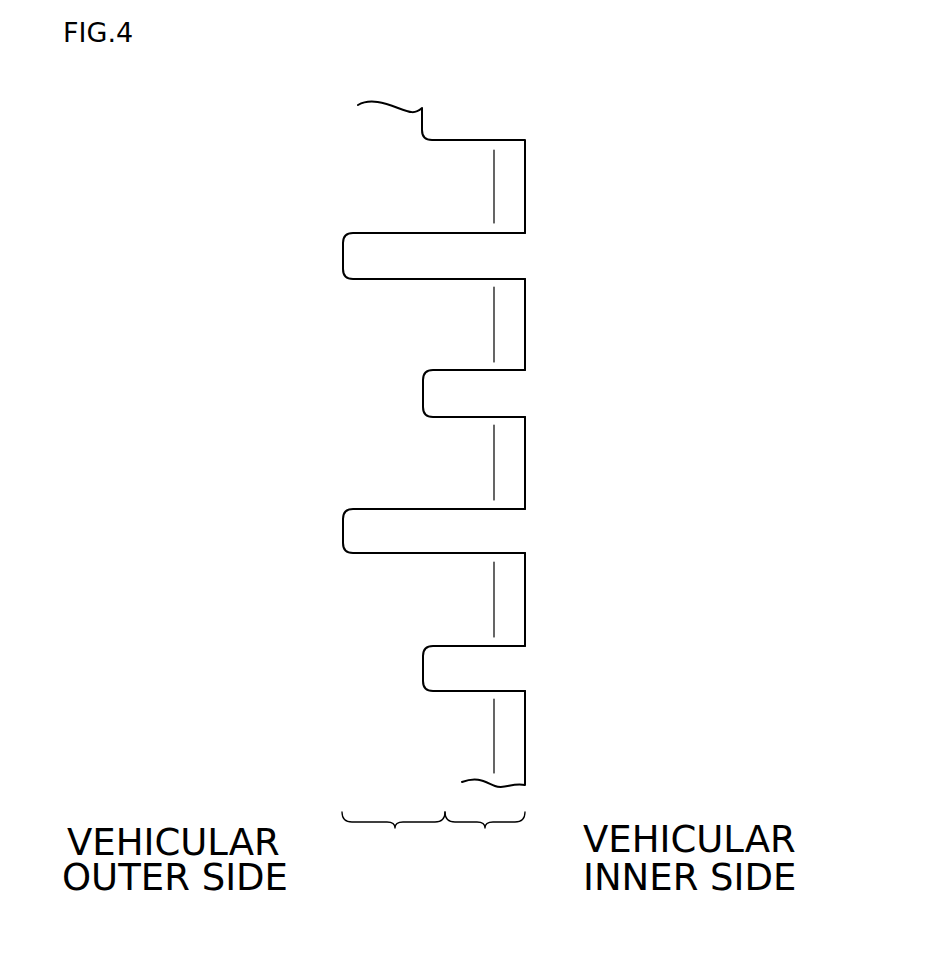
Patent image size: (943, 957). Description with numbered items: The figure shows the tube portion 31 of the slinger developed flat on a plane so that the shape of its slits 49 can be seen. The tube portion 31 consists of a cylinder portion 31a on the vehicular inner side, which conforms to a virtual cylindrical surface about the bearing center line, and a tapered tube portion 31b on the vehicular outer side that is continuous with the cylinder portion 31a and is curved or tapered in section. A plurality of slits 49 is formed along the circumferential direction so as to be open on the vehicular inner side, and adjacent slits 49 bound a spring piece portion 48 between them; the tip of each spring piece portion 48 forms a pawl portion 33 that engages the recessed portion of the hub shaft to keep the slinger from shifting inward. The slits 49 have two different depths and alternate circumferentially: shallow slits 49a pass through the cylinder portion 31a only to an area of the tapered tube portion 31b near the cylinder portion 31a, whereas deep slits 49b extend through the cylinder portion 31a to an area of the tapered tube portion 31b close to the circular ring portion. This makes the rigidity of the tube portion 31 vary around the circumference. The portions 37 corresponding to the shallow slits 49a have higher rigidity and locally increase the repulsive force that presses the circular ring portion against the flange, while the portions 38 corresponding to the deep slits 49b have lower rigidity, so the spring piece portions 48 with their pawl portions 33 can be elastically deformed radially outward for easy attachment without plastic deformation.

The tube portion 31 is at (495, 122).
The cylinder portion 31a is at (485, 833).
The tapered tube portion 31b is at (393, 833).
The pawl portion 33 is at (525, 185).
The portion of the tube portion corresponding to the shallow slits 37 is at (410, 395).
The portion of the tube portion corresponding to the deep slits 38 is at (330, 257).
The spring piece portion 48 is at (458, 152).
The slit 49 is at (447, 462).
The shallow slit 49a is at (513, 395).
The deep slit 49b is at (513, 257).